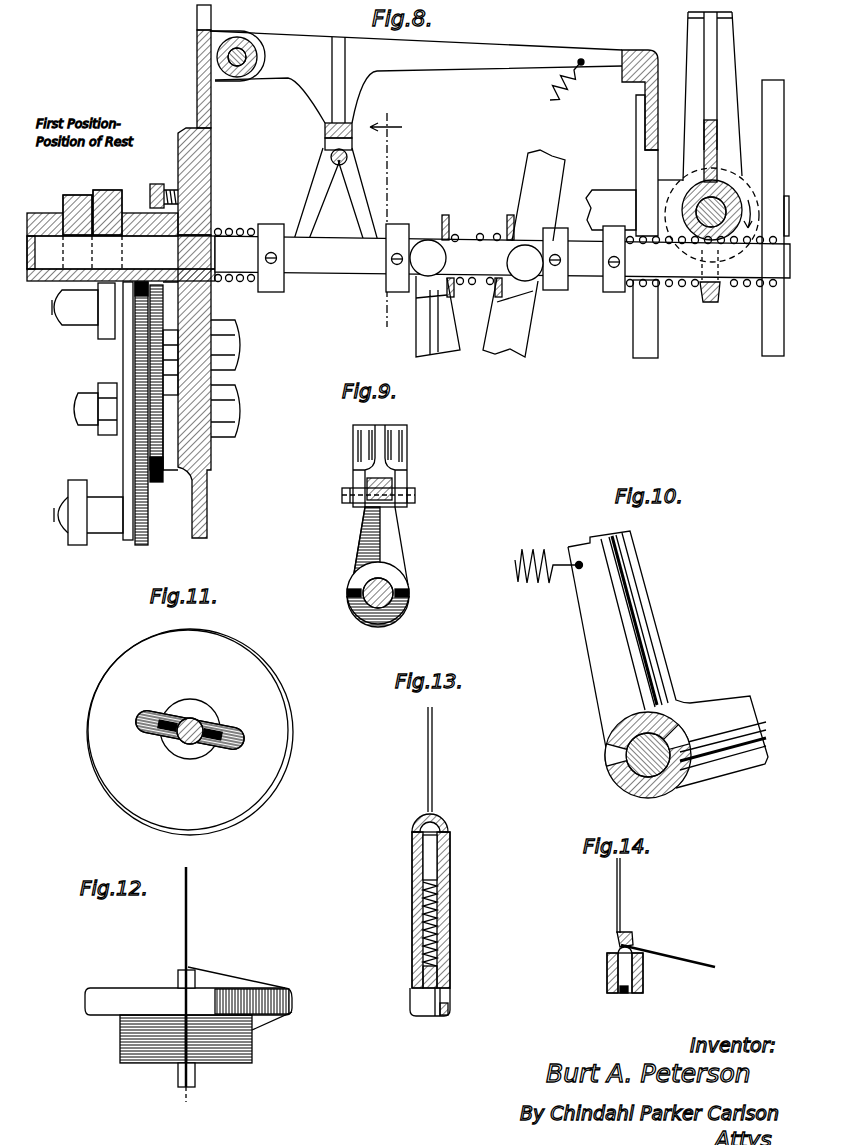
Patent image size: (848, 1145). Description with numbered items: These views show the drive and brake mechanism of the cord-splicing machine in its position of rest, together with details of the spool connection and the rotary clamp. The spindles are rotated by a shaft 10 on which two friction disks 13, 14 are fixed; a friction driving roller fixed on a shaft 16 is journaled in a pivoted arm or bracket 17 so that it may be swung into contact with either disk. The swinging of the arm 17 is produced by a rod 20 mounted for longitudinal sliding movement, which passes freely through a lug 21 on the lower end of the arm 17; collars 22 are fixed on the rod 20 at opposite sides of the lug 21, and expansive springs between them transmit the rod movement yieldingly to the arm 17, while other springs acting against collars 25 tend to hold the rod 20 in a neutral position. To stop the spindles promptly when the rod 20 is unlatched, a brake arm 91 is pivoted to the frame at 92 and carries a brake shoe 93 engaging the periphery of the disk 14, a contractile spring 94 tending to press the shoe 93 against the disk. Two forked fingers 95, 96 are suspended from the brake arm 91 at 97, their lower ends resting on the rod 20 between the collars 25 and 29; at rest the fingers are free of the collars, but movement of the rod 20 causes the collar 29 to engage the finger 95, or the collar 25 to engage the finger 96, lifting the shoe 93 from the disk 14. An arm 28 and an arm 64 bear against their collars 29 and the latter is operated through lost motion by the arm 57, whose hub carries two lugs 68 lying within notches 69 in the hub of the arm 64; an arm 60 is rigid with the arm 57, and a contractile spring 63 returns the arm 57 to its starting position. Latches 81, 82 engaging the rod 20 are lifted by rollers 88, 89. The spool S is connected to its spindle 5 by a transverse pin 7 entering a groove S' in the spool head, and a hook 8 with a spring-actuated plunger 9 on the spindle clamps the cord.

In FIG. 8, the pivot 92 is at (246, 46).
In FIG. 8, the brake arm 91 is at (517, 52).
In FIG. 8, the arm or bracket 17 is at (728, 44).
In FIG. 8, the pivot 97 is at (331, 157).
In FIG. 8, the forked finger 96 is at (312, 197).
In FIG. 9, the forked finger 96 is at (362, 536).
In FIG. 8, the forked finger 95 is at (360, 197).
In FIG. 9, the forked finger 95 is at (396, 548).
In FIG. 8, the spring-actuated plunger 9 is at (386, 220).
In FIG. 13, the spring-actuated plunger 9 is at (437, 858).
In FIG. 8, the contractile spring 94 is at (549, 99).
In FIG. 8, the brake shoe 93 is at (629, 75).
In FIG. 8, the shaft 16 is at (723, 203).
In FIG. 8, the shaft 10 is at (604, 198).
In FIG. 8, the latch 81 is at (70, 195).
In FIG. 8, the latch 82 is at (110, 190).
In FIG. 8, the roller 89 is at (100, 339).
In FIG. 8, the roller 88 is at (75, 484).
In FIG. 8, the collar 25 is at (270, 292).
In FIG. 8, the rod 20 is at (330, 273).
In FIG. 8, the collar 29 is at (395, 282).
In FIG. 8, the arm 28 is at (435, 357).
In FIG. 8, the arm 64 is at (517, 330).
In FIG. 8, the collar 22 is at (611, 292).
In FIG. 8, the lug 21 is at (706, 303).
In FIG. 8, the friction disk 14 is at (640, 358).
In FIG. 13, the friction disk 14 is at (428, 780).
In FIG. 8, the friction disk 13 is at (772, 356).
In FIG. 12, the friction disk 13 is at (188, 937).
In FIG. 10, the contractile spring 63 is at (549, 554).
In FIG. 10, the arm 57 is at (646, 606).
In FIG. 10, the lug 68 is at (676, 740).
In FIG. 10, the arm 60 is at (744, 703).
In FIG. 10, the notch 69 is at (630, 792).
In FIG. 11, the transverse groove S' is at (190, 713).
In FIG. 11, the spindle 5 is at (196, 718).
In FIG. 12, the spindle 5 is at (178, 1072).
In FIG. 13, the spindle 5 is at (447, 1000).
In FIG. 14, the spindle 5 is at (645, 988).
In FIG. 11, the transverse pin 7 is at (210, 721).
In FIG. 11, the spool S is at (198, 732).
In FIG. 12, the spool S is at (188, 1011).
In FIG. 13, the hook 8 is at (418, 820).
In FIG. 14, the hook 8 is at (628, 941).